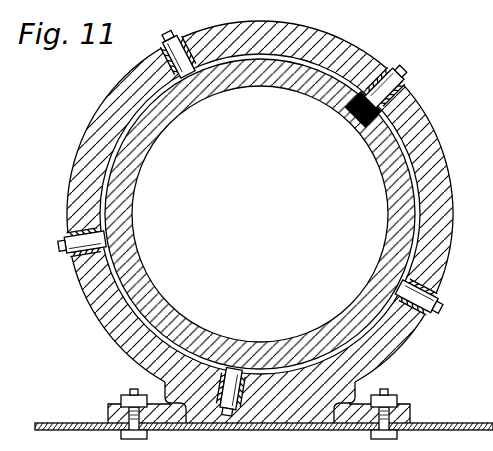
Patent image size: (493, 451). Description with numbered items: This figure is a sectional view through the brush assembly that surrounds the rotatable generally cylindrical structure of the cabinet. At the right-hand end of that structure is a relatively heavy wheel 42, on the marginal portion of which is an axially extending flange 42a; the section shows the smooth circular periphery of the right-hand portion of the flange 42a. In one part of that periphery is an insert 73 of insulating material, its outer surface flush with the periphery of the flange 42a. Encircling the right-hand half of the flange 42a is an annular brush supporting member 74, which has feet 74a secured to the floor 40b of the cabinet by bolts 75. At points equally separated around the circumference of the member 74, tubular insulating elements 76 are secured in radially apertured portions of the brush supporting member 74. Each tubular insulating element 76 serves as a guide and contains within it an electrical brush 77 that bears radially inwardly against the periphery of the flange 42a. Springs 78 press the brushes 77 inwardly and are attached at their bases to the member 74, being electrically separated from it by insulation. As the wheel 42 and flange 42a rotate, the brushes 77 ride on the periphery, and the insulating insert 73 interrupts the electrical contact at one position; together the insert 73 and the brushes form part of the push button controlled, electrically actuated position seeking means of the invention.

The floor 40b is at (65, 425).
The wheel 42 is at (481, 174).
The flange 42a is at (400, 203).
The insert 73 is at (347, 107).
The brush supporting member 74 is at (82, 143).
The feet 74a is at (112, 412).
The bolts 75 is at (133, 392).
The tubular insulating elements 76 is at (167, 47).
The electrical brush 77 is at (178, 43).
The springs 78 is at (168, 33).